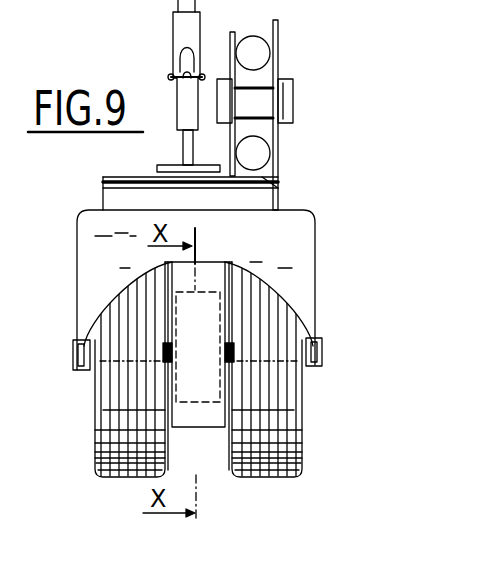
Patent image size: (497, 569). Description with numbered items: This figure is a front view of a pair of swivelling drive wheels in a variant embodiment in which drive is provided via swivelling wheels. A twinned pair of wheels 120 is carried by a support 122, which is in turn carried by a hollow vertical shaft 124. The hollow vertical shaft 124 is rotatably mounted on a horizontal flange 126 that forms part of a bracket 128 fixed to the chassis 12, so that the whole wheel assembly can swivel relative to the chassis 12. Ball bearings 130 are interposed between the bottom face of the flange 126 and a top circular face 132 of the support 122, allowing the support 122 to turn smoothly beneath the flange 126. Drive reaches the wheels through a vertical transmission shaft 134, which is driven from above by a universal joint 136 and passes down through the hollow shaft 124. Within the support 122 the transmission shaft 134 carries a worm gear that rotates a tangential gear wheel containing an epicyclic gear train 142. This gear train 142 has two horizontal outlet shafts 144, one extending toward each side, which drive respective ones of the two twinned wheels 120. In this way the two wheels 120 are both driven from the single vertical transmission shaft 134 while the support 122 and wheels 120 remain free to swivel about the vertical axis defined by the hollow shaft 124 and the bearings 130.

The chassis 12 is at (255, 50).
The universal joint 136 is at (162, 75).
The vertical transmission shaft 134 is at (181, 150).
The hollow vertical shaft 124 is at (152, 170).
The bracket 128 is at (289, 142).
The horizontal flange 126 is at (104, 177).
The ball bearings 130 is at (122, 190).
The top circular face 132 is at (279, 184).
The support 122 is at (300, 263).
The twinned pair of wheels 120 is at (100, 418).
The horizontal outlet shafts 144 is at (76, 358).
The epicyclic gear train 142 is at (199, 405).